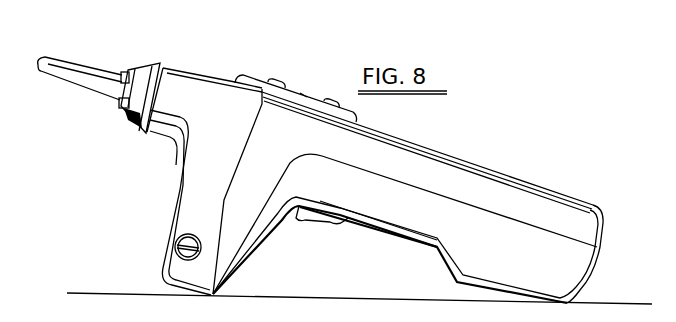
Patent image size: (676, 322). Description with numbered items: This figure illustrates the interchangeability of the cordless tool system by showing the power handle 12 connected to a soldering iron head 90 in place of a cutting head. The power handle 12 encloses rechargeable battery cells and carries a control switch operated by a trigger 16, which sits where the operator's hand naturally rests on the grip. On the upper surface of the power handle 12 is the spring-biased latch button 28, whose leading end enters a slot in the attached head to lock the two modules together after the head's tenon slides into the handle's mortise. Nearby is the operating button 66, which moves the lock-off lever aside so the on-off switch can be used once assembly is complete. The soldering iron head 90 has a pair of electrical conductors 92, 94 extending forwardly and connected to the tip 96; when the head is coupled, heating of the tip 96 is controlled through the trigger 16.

The power handle 12 is at (475, 185).
The trigger 16 is at (343, 218).
The latch button 28 is at (278, 80).
The operating button 66 is at (330, 100).
The soldering iron head 90 is at (193, 92).
The electrical conductor 92 is at (127, 75).
The electrical conductor 94 is at (120, 106).
The tip 96 is at (55, 64).